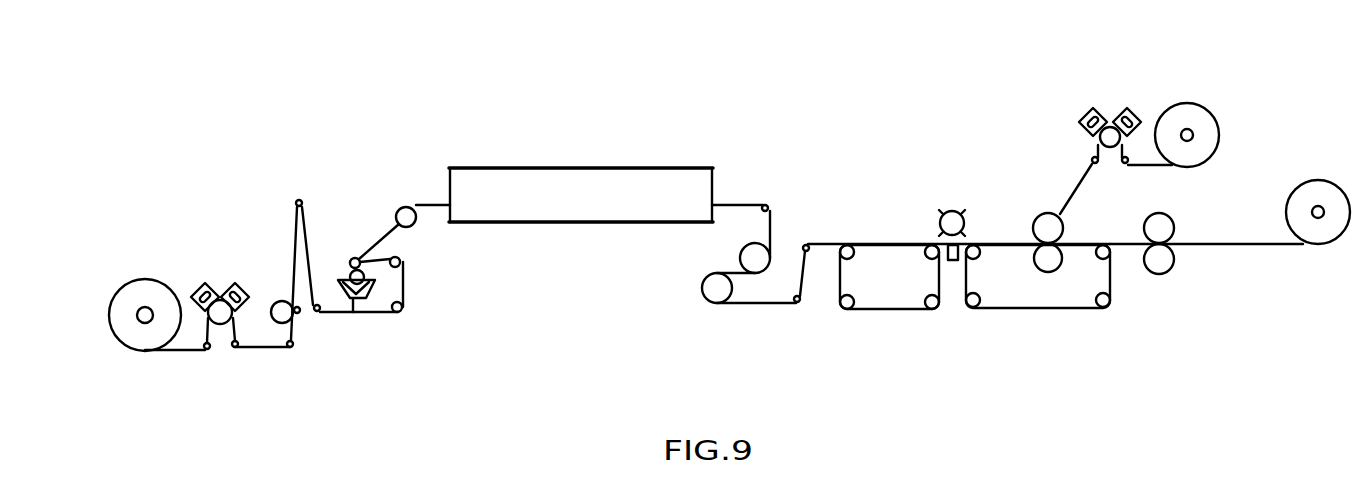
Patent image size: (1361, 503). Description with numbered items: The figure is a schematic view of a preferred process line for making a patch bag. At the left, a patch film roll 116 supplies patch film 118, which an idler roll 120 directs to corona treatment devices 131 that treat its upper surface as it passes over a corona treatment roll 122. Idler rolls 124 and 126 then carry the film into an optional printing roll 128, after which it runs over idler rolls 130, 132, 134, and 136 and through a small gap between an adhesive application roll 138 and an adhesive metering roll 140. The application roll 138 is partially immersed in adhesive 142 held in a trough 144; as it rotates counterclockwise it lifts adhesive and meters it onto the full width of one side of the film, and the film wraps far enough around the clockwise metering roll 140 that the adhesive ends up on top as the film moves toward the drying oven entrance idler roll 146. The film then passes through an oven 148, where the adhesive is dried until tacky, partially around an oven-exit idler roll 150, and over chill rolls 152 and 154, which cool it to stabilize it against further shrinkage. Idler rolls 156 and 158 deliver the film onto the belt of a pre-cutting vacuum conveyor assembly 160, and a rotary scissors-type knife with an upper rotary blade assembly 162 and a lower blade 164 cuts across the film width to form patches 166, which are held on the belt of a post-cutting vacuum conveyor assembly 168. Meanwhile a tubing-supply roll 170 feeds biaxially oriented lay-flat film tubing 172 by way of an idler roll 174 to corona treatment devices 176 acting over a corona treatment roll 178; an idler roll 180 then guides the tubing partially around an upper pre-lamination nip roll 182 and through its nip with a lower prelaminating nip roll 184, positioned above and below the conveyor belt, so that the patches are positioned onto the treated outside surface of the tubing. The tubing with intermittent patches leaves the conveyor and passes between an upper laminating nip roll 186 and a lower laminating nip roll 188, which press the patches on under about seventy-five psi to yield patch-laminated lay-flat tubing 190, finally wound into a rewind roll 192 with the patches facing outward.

The patch film roll 116 is at (147, 279).
The patch film 118 is at (170, 352).
The idler roll 120 is at (206, 350).
The corona treatment roll 122 is at (219, 326).
The idler roll 124 is at (236, 349).
The idler roll 126 is at (289, 349).
The printing roll 128 is at (282, 300).
The idler roll 130 is at (299, 199).
The corona treatment devices 131 is at (202, 284).
The idler roll 132 is at (315, 312).
The idler roll 134 is at (400, 310).
The idler roll 136 is at (400, 261).
The adhesive application roll 138 is at (363, 275).
The adhesive metering roll 140 is at (351, 259).
The adhesive 142 is at (367, 299).
The trough 144 is at (353, 312).
The drying oven entrance idler roll 146 is at (398, 209).
The oven 148 is at (608, 167).
The oven-exit idler roll 150 is at (770, 204).
The chill roll 152 is at (745, 259).
The chill roll 154 is at (707, 290).
The idler roll 156 is at (796, 303).
The idler roll 158 is at (808, 245).
The pre-cutting vacuum conveyor assembly 160 is at (896, 320).
The upper rotary blade assembly 162 is at (951, 210).
The lower blade 164 is at (953, 262).
The patches 166 is at (1000, 247).
The post-cutting vacuum conveyor assembly 168 is at (1052, 324).
The tubing-supply roll 170 is at (1181, 103).
The lay-flat film tubing 172 is at (1157, 168).
The idler roll 174 is at (1124, 165).
The corona treatment devices 176 is at (1085, 112).
The corona treatment roll 178 is at (1100, 138).
The idler roll 180 is at (1090, 160).
The upper pre-lamination nip roll 182 is at (1040, 228).
The lower prelaminating nip roll 184 is at (1053, 268).
The upper laminating nip roll 186 is at (1163, 228).
The lower laminating nip roll 188 is at (1158, 266).
The patch-laminated lay-flat tubing 190 is at (1213, 246).
The rewind roll 192 is at (1330, 195).